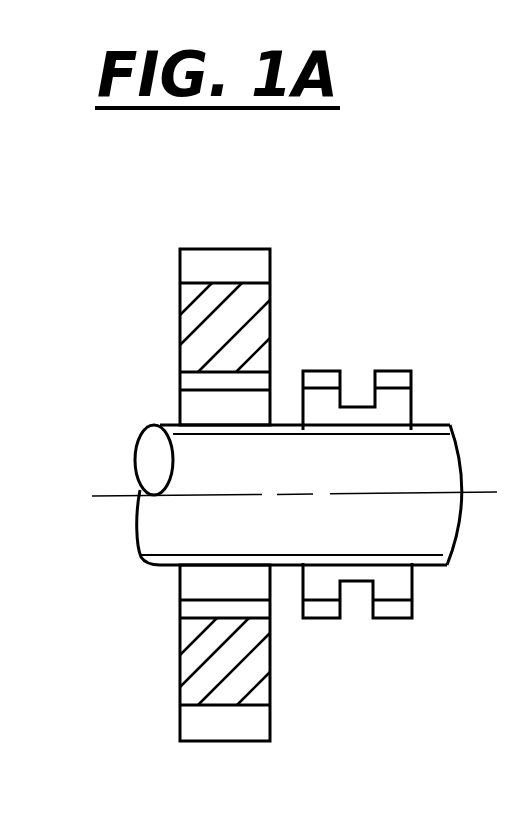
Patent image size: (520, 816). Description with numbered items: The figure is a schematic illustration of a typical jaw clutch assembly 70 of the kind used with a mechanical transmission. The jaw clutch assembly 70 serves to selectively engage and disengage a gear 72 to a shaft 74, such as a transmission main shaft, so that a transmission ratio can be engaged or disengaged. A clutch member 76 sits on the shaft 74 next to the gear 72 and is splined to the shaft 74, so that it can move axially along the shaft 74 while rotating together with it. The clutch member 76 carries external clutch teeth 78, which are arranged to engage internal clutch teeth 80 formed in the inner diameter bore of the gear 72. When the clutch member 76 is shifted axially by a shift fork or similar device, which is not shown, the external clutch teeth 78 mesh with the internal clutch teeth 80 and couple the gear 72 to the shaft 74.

The jaw clutch assembly 70 is at (336, 206).
The gear 72 is at (198, 318).
The shaft 74 is at (198, 529).
The clutch member 76 is at (393, 405).
The external clutch teeth 78 is at (322, 378).
The internal clutch teeth 80 is at (198, 380).